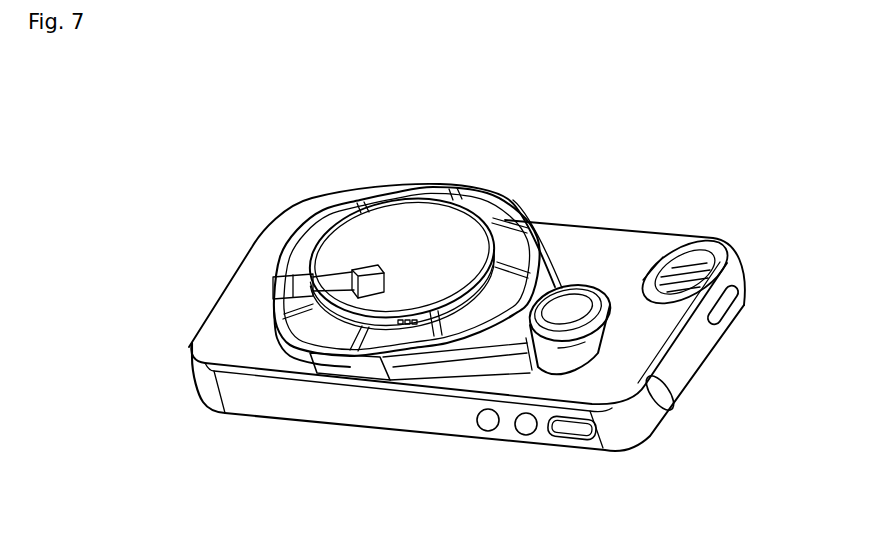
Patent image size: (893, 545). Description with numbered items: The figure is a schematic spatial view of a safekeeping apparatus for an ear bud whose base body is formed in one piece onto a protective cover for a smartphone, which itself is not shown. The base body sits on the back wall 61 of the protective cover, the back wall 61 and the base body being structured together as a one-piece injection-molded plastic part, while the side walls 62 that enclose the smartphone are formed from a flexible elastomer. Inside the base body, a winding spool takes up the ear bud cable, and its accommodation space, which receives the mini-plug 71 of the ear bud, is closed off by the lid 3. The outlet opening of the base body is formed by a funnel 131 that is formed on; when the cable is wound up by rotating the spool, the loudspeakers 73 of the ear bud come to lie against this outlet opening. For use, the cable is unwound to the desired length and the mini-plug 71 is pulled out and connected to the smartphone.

The lid 3 is at (418, 223).
The back wall 61 is at (643, 247).
The side walls 62 is at (410, 417).
The mini-plug 71 is at (273, 287).
The loudspeakers 73 is at (600, 340).
The funnel 131 is at (533, 290).